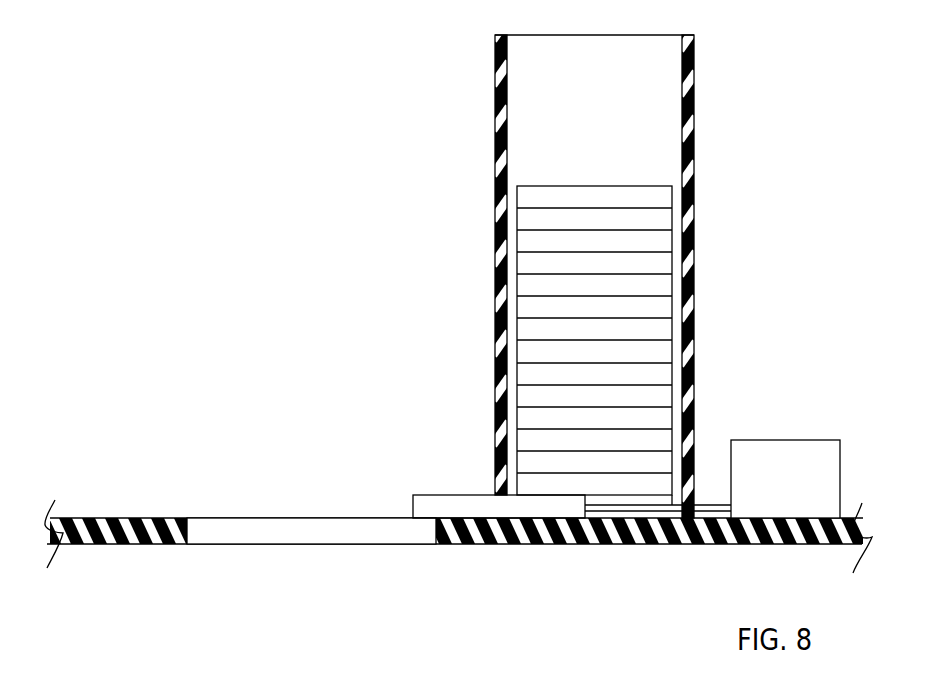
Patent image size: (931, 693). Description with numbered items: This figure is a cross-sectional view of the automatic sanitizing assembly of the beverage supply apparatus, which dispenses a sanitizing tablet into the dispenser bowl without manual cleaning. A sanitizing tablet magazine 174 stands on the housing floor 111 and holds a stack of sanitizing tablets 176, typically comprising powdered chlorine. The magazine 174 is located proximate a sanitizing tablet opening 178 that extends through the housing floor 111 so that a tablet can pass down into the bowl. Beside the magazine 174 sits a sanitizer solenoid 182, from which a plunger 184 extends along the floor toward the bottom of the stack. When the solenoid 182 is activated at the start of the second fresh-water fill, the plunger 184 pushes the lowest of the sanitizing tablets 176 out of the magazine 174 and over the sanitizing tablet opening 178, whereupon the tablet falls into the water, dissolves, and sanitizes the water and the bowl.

The housing floor 111 is at (135, 520).
The sanitizing tablet magazine 174 is at (693, 100).
The sanitizing tablets 176 is at (657, 311).
The sanitizing tablet opening 178 is at (302, 523).
The sanitizer solenoid 182 is at (765, 447).
The plunger 184 is at (630, 505).